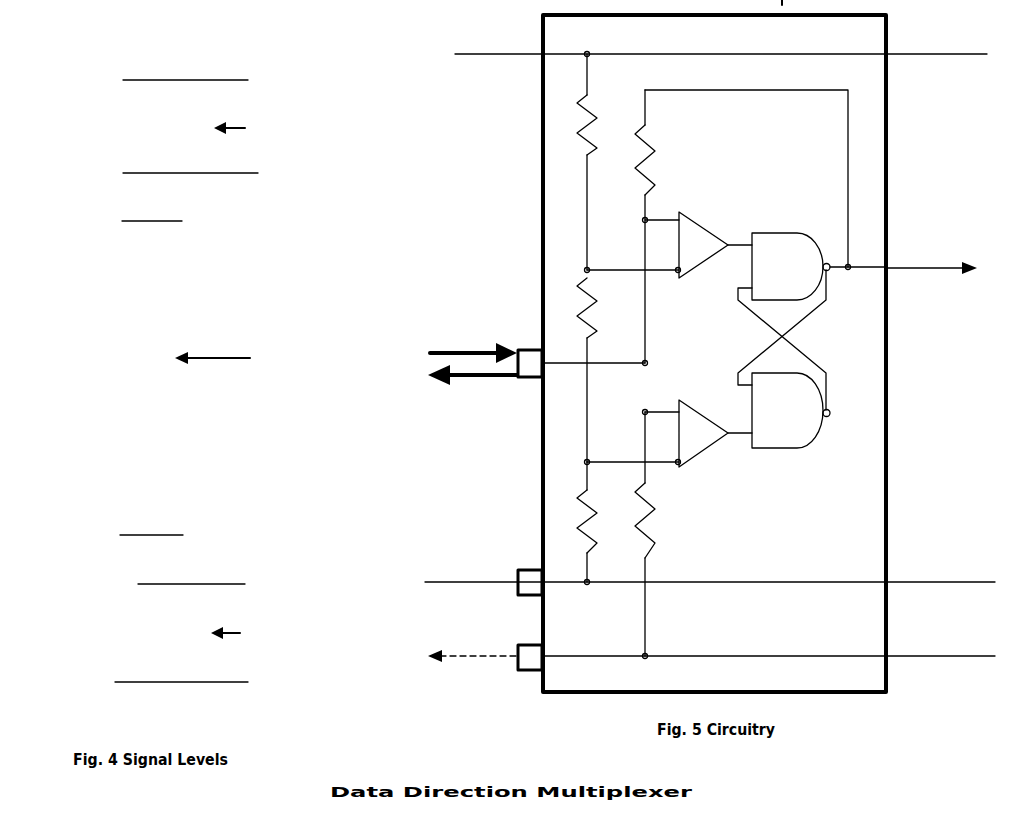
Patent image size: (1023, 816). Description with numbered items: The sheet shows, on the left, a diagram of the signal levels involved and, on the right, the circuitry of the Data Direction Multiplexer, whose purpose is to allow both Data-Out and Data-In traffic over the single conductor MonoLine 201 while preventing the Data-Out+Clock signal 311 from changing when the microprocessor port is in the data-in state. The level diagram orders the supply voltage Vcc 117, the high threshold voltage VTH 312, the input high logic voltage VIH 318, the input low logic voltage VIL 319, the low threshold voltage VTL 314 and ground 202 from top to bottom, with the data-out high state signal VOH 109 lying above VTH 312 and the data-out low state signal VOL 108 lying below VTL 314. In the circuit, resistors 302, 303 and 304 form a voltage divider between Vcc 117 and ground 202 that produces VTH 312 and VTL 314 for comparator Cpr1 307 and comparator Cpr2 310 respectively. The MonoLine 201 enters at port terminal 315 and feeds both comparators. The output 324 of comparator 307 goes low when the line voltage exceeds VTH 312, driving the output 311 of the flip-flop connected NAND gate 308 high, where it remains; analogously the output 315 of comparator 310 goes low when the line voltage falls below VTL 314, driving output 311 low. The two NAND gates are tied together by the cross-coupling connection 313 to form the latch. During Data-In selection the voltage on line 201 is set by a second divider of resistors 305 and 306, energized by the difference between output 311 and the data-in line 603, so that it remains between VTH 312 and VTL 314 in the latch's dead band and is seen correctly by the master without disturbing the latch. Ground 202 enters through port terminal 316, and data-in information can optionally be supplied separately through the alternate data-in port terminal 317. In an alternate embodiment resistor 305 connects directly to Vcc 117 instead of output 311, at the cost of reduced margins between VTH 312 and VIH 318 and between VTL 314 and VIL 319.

In FIG. 4, the supply voltage Vcc 117 is at (151, 81).
In FIG. 5, the supply voltage Vcc 117 is at (722, 38).
In FIG. 4, the data-out high state signal VOH 109 is at (263, 130).
In FIG. 4, the high threshold voltage VTH 312 is at (156, 174).
In FIG. 5, the high threshold voltage VTH 312 is at (617, 266).
In FIG. 4, the input high logic voltage VIH 318 is at (120, 221).
In FIG. 4, the input low logic voltage VIL 319 is at (121, 536).
In FIG. 4, the low threshold voltage VTL 314 is at (150, 581).
In FIG. 5, the low threshold voltage VTL 314 is at (618, 452).
In FIG. 4, the data-out low state signal VOL 108 is at (261, 631).
In FIG. 4, the ground 202 is at (150, 695).
In FIG. 5, the ground 202 is at (710, 583).
In FIG. 5, the MonoLine signal / port terminal 201 is at (652, 362).
In FIG. 5, the data-in line 603 is at (438, 387).
In FIG. 5, the resistor 302 is at (604, 113).
In FIG. 5, the resistor 303 is at (607, 370).
In FIG. 5, the resistor 304 is at (568, 515).
In FIG. 5, the resistor 305 is at (629, 226).
In FIG. 5, the resistor 306 is at (662, 534).
In FIG. 5, the comparator Cpr1 307 is at (702, 216).
In FIG. 5, the comparator Cpr2 310 is at (700, 400).
In FIG. 5, the output of comparator Cpr1 324 is at (738, 240).
In FIG. 5, the flip-flop connected NAND gate 308 is at (807, 230).
In FIG. 5, the cross-coupling connection 313 is at (833, 363).
In FIG. 5, the Data-Out+Clock signal 311 is at (940, 255).
In FIG. 5, the port terminal / output of comparator Cpr2 315 is at (735, 442).
In FIG. 5, the ground port terminal 316 is at (520, 558).
In FIG. 5, the alternate data-in port terminal 317 is at (527, 680).